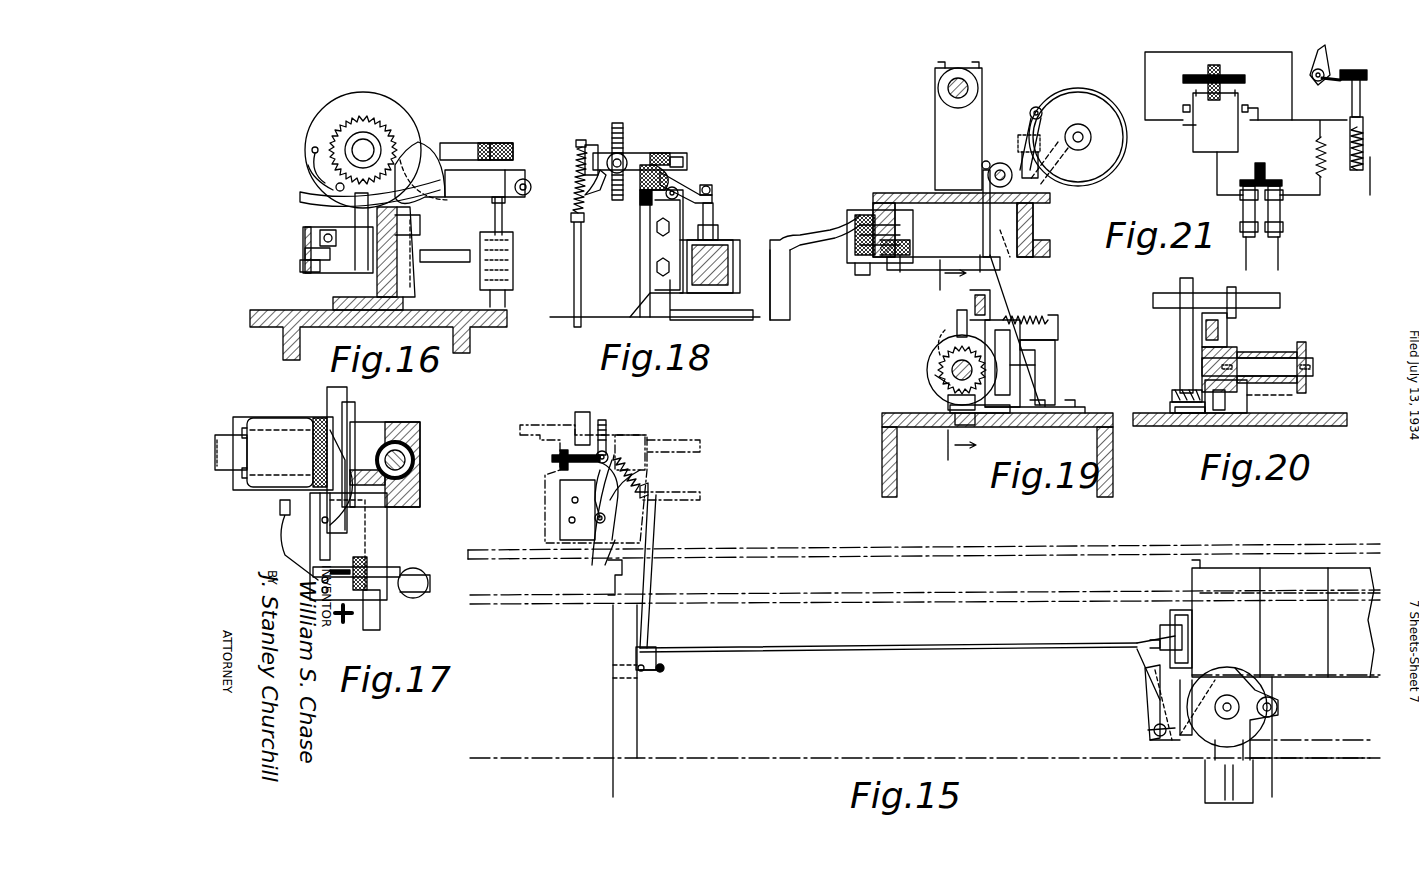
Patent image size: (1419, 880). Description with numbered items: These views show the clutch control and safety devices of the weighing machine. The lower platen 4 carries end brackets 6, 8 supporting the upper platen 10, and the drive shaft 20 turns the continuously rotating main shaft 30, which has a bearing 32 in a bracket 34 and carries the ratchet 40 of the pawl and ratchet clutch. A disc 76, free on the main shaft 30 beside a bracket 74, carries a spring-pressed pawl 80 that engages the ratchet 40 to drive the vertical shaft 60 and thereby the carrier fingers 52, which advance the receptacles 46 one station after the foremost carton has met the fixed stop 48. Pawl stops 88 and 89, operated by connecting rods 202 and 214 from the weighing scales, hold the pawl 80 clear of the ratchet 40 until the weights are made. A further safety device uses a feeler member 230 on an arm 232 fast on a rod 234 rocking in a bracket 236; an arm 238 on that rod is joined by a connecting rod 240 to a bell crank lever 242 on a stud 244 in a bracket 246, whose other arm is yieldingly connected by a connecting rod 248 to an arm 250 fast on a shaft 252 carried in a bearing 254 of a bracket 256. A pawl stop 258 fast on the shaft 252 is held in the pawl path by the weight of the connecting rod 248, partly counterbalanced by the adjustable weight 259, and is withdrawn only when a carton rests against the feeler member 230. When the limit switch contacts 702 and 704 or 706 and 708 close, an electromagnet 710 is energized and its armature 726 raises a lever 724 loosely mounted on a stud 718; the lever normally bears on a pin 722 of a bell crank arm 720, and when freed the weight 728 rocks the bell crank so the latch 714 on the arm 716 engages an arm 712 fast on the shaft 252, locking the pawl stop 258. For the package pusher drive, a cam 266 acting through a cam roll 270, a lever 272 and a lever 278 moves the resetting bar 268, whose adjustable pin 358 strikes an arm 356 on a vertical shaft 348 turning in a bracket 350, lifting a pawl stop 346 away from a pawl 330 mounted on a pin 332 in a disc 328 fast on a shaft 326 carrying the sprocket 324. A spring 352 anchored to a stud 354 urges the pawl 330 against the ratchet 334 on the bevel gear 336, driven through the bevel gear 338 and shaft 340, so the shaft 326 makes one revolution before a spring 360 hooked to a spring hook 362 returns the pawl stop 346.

In FIG. 19, the lower platen 4 is at (882, 455).
In FIG. 20, the lower platen 4 is at (1323, 413).
In FIG. 15, the lower platen 4 is at (613, 788).
In FIG. 15, the end bracket 6 is at (1285, 718).
In FIG. 15, the end bracket 8 is at (613, 722).
In FIG. 16, the upper platen 10 is at (260, 310).
In FIG. 19, the upper platen 10 is at (906, 190).
In FIG. 15, the upper platen 10 is at (995, 525).
In FIG. 19, the drive shaft 20 is at (949, 360).
In FIG. 16, the main shaft 30 is at (365, 150).
In FIG. 19, the main shaft 30 is at (960, 88).
In FIG. 17, the main shaft 30 is at (217, 437).
In FIG. 15, the main shaft 30 is at (700, 442).
In FIG. 17, the bearing 32 is at (272, 418).
In FIG. 15, the bearing 32 is at (648, 428).
In FIG. 16, the bracket 34 is at (336, 297).
In FIG. 17, the bracket 34 is at (240, 417).
In FIG. 15, the bracket 34 is at (660, 490).
In FIG. 16, the ratchet 40 is at (380, 127).
In FIG. 18, the ratchet 40 is at (615, 122).
In FIG. 17, the ratchet 40 is at (327, 393).
In FIG. 15, the ratchet 40 is at (601, 420).
In FIG. 15, the receptacles 46 is at (1195, 568).
In FIG. 15, the fixed stop 48 is at (1170, 625).
In FIG. 18, the carrier fingers 52 is at (780, 282).
In FIG. 17, the vertical shaft 60 is at (418, 446).
In FIG. 15, the bracket 74 is at (562, 432).
In FIG. 16, the disc 76 is at (360, 84).
In FIG. 17, the disc 76 is at (355, 405).
In FIG. 15, the disc 76 is at (580, 410).
In FIG. 16, the spring-pressed pawl 80 is at (305, 198).
In FIG. 16, the pawl stop 88 is at (420, 225).
In FIG. 15, the pawl stop 88 is at (595, 480).
In FIG. 16, the pawl stop 89 is at (303, 232).
In FIG. 16, the connecting rod 202 is at (450, 253).
In FIG. 16, the connecting rod 214 is at (335, 252).
In FIG. 15, the feeler member 230 is at (1177, 610).
In FIG. 15, the arm 232 is at (1150, 670).
In FIG. 15, the rod 234 is at (1150, 738).
In FIG. 15, the bracket 236 is at (1180, 738).
In FIG. 15, the arm 238 is at (1135, 660).
In FIG. 15, the connecting rod 240 is at (965, 625).
In FIG. 15, the bell crank lever 242 is at (633, 660).
In FIG. 15, the stud 244 is at (650, 675).
In FIG. 15, the bracket 246 is at (625, 675).
In FIG. 15, the connecting rod 248 is at (650, 540).
In FIG. 15, the arm 250 is at (635, 447).
In FIG. 16, the shaft 252 is at (510, 158).
In FIG. 18, the shaft 252 is at (630, 153).
In FIG. 15, the shaft 252 is at (565, 462).
In FIG. 15, the bearing 254 is at (605, 452).
In FIG. 16, the bracket 256 is at (505, 215).
In FIG. 18, the bracket 256 is at (655, 297).
In FIG. 17, the bracket 256 is at (350, 532).
In FIG. 15, the bracket 256 is at (590, 478).
In FIG. 16, the pawl stop 258 is at (420, 160).
In FIG. 18, the pawl stop 258 is at (605, 190).
In FIG. 15, the pawl stop 258 is at (577, 545).
In FIG. 18, the adjustable weight 259 is at (662, 168).
In FIG. 19, the cam 266 is at (1075, 103).
In FIG. 19, the resetting bar 268 is at (1015, 260).
In FIG. 19, the cam roll 270 is at (1040, 95).
In FIG. 19, the lever 272 is at (1022, 135).
In FIG. 19, the lever 278 is at (960, 240).
In FIG. 20, the sprocket 324 is at (1306, 340).
In FIG. 20, the shaft 326 is at (1315, 365).
In FIG. 19, the disc 328 is at (930, 357).
In FIG. 20, the disc 328 is at (1240, 337).
In FIG. 19, the pawl 330 is at (945, 410).
In FIG. 20, the pawl 330 is at (1210, 417).
In FIG. 19, the pin 332 is at (948, 400).
In FIG. 20, the pin 332 is at (1250, 422).
In FIG. 19, the ratchet 334 is at (935, 346).
In FIG. 20, the ratchet 334 is at (1200, 305).
In FIG. 20, the bevel gear 336 is at (1200, 343).
In FIG. 20, the bevel gear 338 is at (1170, 395).
In FIG. 19, the shaft 340 is at (957, 315).
In FIG. 20, the shaft 340 is at (1180, 358).
In FIG. 19, the pawl stop 346 is at (985, 422).
In FIG. 19, the vertical shaft 348 is at (1035, 365).
In FIG. 19, the bracket 350 is at (1055, 340).
In FIG. 19, the spring 352 is at (945, 383).
In FIG. 19, the stud 354 is at (935, 370).
In FIG. 19, the arm 356 is at (1007, 318).
In FIG. 19, the adjustable pin 358 is at (975, 300).
In FIG. 19, the spring 360 is at (1030, 320).
In FIG. 19, the spring hook 362 is at (1055, 318).
In FIG. 21, the contact point 702 is at (1185, 104).
In FIG. 21, the contact point 704 is at (1190, 113).
In FIG. 21, the contact point 706 is at (1246, 100).
In FIG. 21, the contact point 708 is at (1252, 118).
In FIG. 16, the electromagnet 710 is at (513, 245).
In FIG. 18, the electromagnet 710 is at (720, 262).
In FIG. 21, the electromagnet 710 is at (1350, 175).
In FIG. 17, the electromagnet 710 is at (413, 575).
In FIG. 16, the arm 712 is at (505, 142).
In FIG. 18, the arm 712 is at (658, 148).
In FIG. 18, the latch 714 is at (680, 161).
In FIG. 18, the arm 716 is at (710, 187).
In FIG. 18, the stud 718 is at (658, 210).
In FIG. 18, the arm 720 is at (655, 300).
In FIG. 18, the pin 722 is at (713, 222).
In FIG. 18, the lever 724 is at (685, 188).
In FIG. 18, the armature 726 is at (790, 240).
In FIG. 18, the weight 728 is at (642, 206).